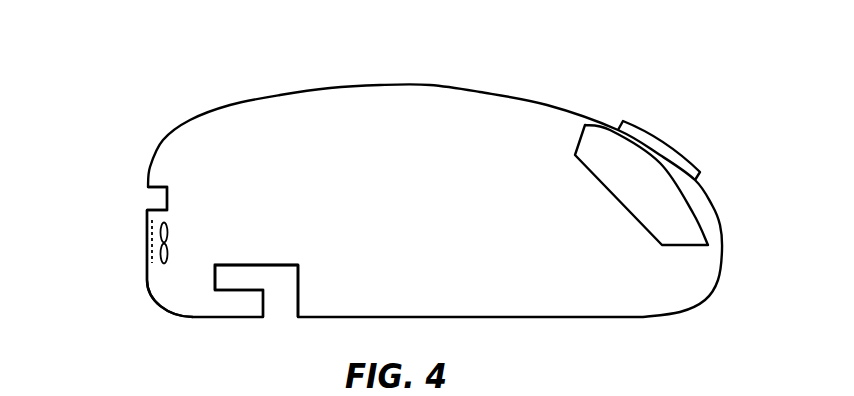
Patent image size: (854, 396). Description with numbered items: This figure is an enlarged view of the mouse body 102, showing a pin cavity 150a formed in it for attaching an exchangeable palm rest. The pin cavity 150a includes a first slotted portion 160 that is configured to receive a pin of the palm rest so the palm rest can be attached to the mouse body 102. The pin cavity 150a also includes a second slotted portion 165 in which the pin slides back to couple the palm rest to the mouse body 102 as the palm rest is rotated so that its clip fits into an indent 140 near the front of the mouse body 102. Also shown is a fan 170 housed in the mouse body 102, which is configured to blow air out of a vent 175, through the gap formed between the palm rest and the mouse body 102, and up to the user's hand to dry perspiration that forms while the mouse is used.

The mouse body 102 is at (497, 155).
The indent 140 is at (167, 183).
The pin cavity 150a is at (297, 262).
The first slotted portion 160 is at (300, 291).
The second slotted portion 165 is at (232, 265).
The fan 170 is at (163, 265).
The vent 175 is at (149, 243).